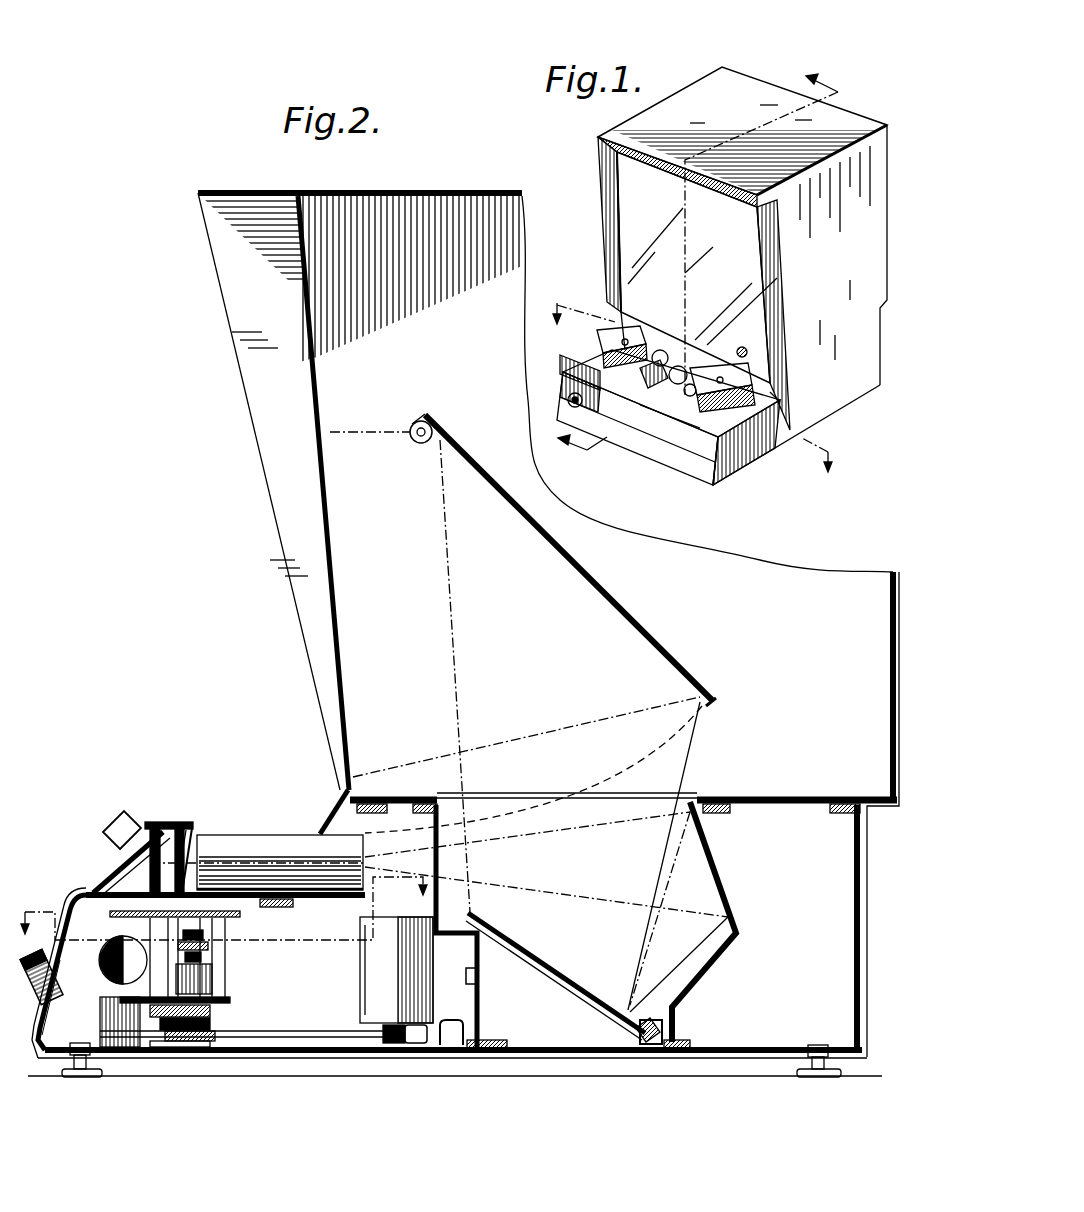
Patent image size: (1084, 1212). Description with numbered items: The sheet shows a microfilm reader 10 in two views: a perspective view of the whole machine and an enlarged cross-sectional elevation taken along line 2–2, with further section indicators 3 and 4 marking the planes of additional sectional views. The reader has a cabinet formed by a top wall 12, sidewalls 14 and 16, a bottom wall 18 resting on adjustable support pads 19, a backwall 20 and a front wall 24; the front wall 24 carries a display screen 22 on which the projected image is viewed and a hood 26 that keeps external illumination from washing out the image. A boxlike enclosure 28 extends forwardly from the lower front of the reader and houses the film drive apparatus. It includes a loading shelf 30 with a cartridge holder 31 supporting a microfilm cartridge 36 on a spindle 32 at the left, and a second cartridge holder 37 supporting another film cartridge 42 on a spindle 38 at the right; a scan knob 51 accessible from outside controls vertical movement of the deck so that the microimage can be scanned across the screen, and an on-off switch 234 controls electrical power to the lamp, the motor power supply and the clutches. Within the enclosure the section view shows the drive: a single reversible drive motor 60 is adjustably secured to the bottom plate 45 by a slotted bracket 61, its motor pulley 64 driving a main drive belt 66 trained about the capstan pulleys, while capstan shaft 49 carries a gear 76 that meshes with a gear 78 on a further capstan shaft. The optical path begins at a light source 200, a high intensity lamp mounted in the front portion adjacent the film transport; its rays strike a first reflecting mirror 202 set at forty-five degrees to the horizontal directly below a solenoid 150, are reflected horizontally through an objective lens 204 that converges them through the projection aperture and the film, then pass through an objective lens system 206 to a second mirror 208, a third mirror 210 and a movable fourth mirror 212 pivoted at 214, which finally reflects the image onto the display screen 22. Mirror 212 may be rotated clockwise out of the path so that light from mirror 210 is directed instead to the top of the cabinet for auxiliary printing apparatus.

In FIG. 1, the section line 2- 2 is at (685, 256).
In FIG. 1, the section line 3- 3 is at (687, 402).
In FIG. 2, the section line 4- 4 is at (222, 916).
In FIG. 2, the microfilm reader 10 is at (745, 1064).
In FIG. 1, the microfilm reader 10 is at (858, 395).
In FIG. 2, the top wall 12 is at (405, 190).
In FIG. 1, the top wall 12 is at (697, 100).
In FIG. 1, the sidewall 14 is at (847, 226).
In FIG. 1, the sidewall 16 is at (614, 131).
In FIG. 2, the bottom wall 18 is at (548, 1058).
In FIG. 1, the bottom wall 18 is at (767, 435).
In FIG. 2, the adjustable support pads 19 is at (70, 1078).
In FIG. 2, the backwall 20 is at (898, 574).
In FIG. 1, the backwall 20 is at (895, 135).
In FIG. 2, the display screen 22 is at (325, 478).
In FIG. 1, the display screen 22 is at (668, 266).
In FIG. 2, the front wall 24 is at (298, 222).
In FIG. 1, the front wall 24 is at (620, 157).
In FIG. 2, the hood 26 is at (198, 190).
In FIG. 1, the hood 26 is at (603, 161).
In FIG. 2, the boxlike enclosure 28 is at (69, 893).
In FIG. 1, the boxlike enclosure 28 is at (714, 485).
In FIG. 2, the loading shelf 30 is at (93, 882).
In FIG. 1, the loading shelf 30 is at (690, 382).
In FIG. 1, the cartridge holder 31 is at (580, 362).
In FIG. 1, the spindle 32 is at (617, 332).
In FIG. 1, the microfilm cartridge 36 is at (606, 330).
In FIG. 1, the second cartridge holder 37 is at (717, 393).
In FIG. 1, the spindle 38 is at (718, 367).
In FIG. 1, the film cartridge 42 is at (738, 372).
In FIG. 2, the base pan 45 is at (256, 1058).
In FIG. 2, the capstan shaft 49 is at (240, 915).
In FIG. 2, the scan knob 51 is at (48, 980).
In FIG. 1, the scan knob 51 is at (568, 399).
In FIG. 2, the drive motor 60 is at (370, 970).
In FIG. 2, the bracket 61 is at (448, 1030).
In FIG. 2, the motor pulley 64 is at (390, 1030).
In FIG. 2, the main drive belt 66 is at (330, 1030).
In FIG. 2, the gear 76 is at (210, 1000).
In FIG. 2, the gear 78 is at (165, 1040).
In FIG. 2, the solenoid 150 is at (119, 814).
In FIG. 2, the light source 200 is at (62, 916).
In FIG. 2, the first reflecting mirror 202 is at (118, 860).
In FIG. 2, the objective lens 204 is at (165, 825).
In FIG. 2, the objective lens system 206 is at (258, 835).
In FIG. 2, the second mirror 208 is at (712, 858).
In FIG. 2, the third mirror 210 is at (548, 962).
In FIG. 2, the movable fourth mirror 212 is at (650, 641).
In FIG. 2, the pivot 214 is at (419, 443).
In FIG. 1, the on-off switch 234 is at (778, 399).